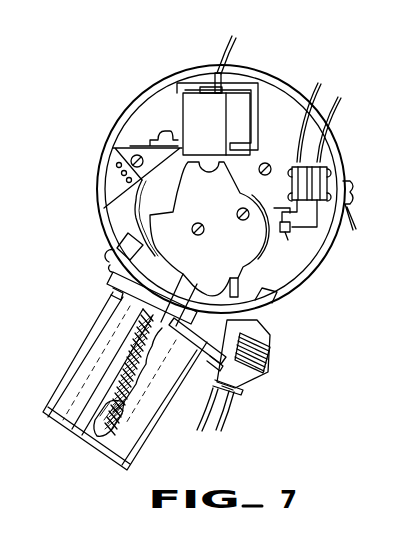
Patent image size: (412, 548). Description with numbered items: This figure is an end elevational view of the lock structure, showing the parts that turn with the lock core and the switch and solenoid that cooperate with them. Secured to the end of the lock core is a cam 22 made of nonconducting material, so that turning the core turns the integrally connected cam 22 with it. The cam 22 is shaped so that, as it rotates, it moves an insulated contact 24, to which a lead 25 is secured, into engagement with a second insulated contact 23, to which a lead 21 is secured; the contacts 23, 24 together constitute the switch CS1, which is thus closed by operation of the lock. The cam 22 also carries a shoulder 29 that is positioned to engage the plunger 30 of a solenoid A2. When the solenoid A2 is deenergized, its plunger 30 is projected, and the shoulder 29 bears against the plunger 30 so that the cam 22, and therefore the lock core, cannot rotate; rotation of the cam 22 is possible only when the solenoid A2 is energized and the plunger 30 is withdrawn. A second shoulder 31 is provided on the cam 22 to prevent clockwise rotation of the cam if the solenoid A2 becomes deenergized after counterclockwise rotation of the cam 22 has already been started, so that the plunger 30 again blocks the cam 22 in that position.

The lead 21 is at (318, 82).
The cam 22 is at (227, 266).
The insulated contact 23 is at (274, 208).
The insulated contact 24 is at (287, 240).
The lead 25 is at (341, 99).
The shoulder 29 is at (112, 280).
The plunger 30 is at (188, 323).
The second shoulder 31 is at (166, 206).
The solenoid A2 is at (71, 369).
The switch CS1 is at (316, 243).